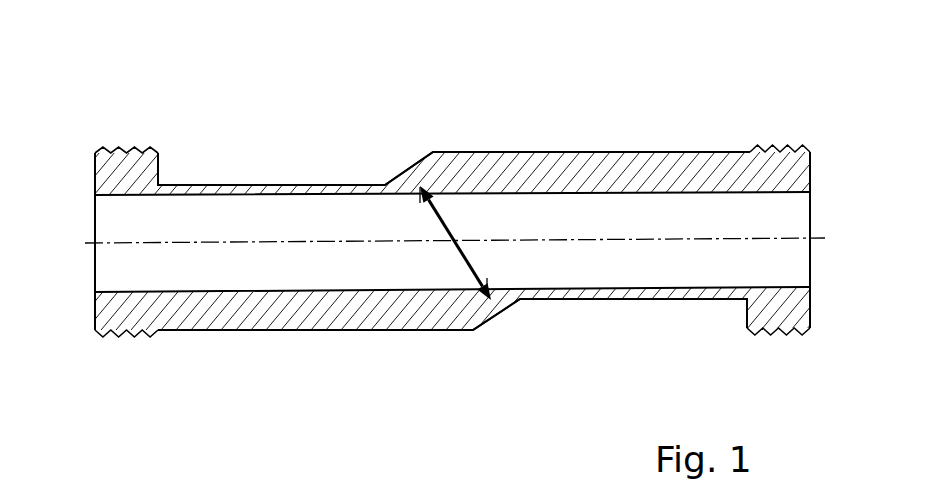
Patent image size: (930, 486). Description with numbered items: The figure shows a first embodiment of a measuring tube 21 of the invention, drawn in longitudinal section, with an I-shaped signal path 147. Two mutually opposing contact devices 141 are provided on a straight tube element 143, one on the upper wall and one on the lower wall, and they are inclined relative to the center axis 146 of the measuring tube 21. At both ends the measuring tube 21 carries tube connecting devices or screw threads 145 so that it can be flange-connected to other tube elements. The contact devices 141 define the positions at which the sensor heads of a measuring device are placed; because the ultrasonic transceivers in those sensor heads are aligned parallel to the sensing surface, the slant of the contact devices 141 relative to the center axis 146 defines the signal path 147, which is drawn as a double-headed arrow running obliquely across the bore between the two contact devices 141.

The measuring tube 21 is at (540, 86).
The contact device 141 is at (400, 173).
The straight tube element 143 is at (103, 222).
The screw thread 145 is at (120, 335).
The center axis 146 is at (112, 246).
The I-shaped signal path 147 is at (455, 253).